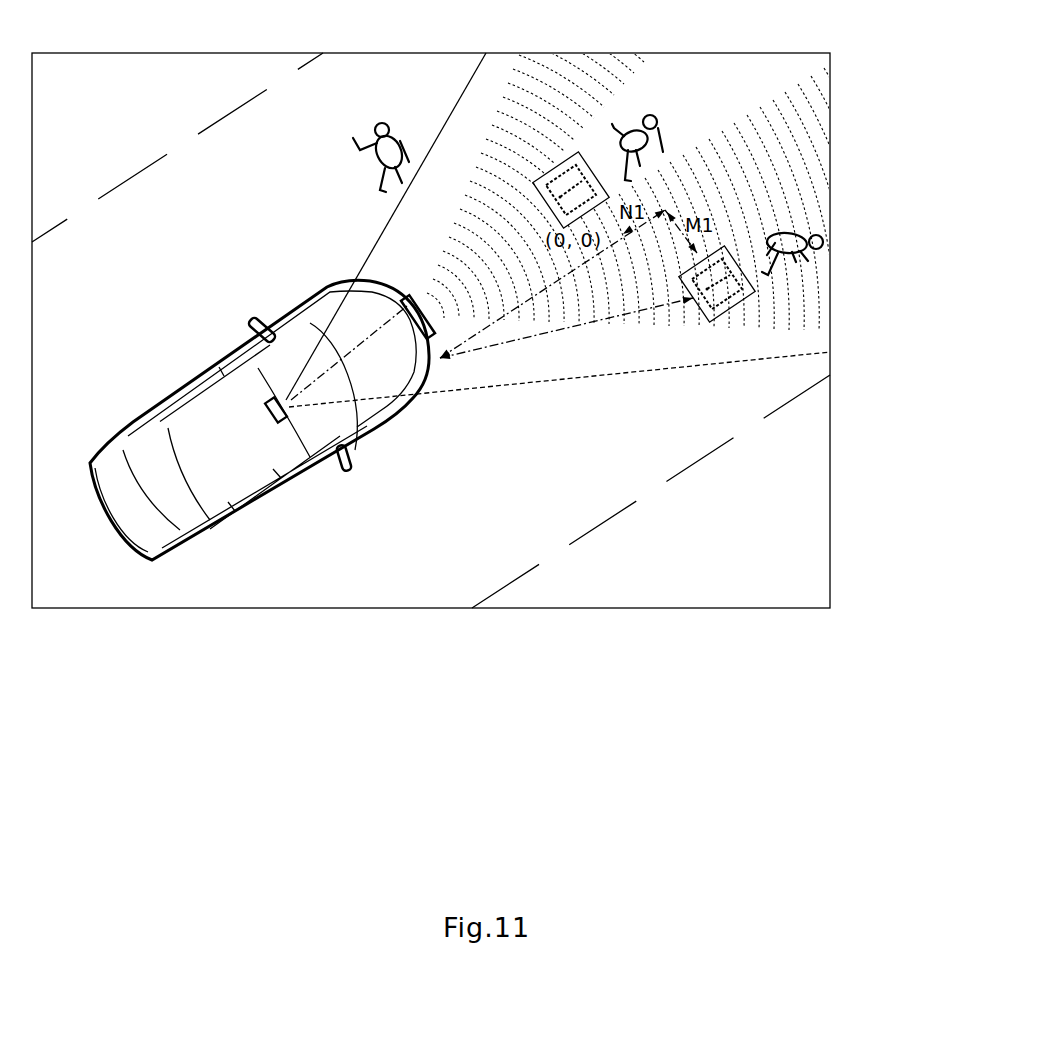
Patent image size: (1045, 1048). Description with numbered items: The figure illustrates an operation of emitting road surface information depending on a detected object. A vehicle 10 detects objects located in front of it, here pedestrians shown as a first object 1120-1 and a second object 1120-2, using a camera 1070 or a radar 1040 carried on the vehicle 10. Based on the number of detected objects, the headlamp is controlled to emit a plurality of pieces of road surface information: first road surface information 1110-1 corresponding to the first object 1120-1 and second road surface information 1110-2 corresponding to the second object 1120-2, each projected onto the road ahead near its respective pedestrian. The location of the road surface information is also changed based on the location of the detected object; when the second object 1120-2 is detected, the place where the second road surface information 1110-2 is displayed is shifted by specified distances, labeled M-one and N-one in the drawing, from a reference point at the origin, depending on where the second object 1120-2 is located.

The vehicle 10 is at (150, 570).
The radar 1040 is at (403, 297).
The camera 1070 is at (281, 424).
The first road surface information 1110-1 is at (549, 165).
The second road surface information 1110-2 is at (750, 299).
The first object 1120-1 is at (653, 112).
The second object 1120-2 is at (822, 244).